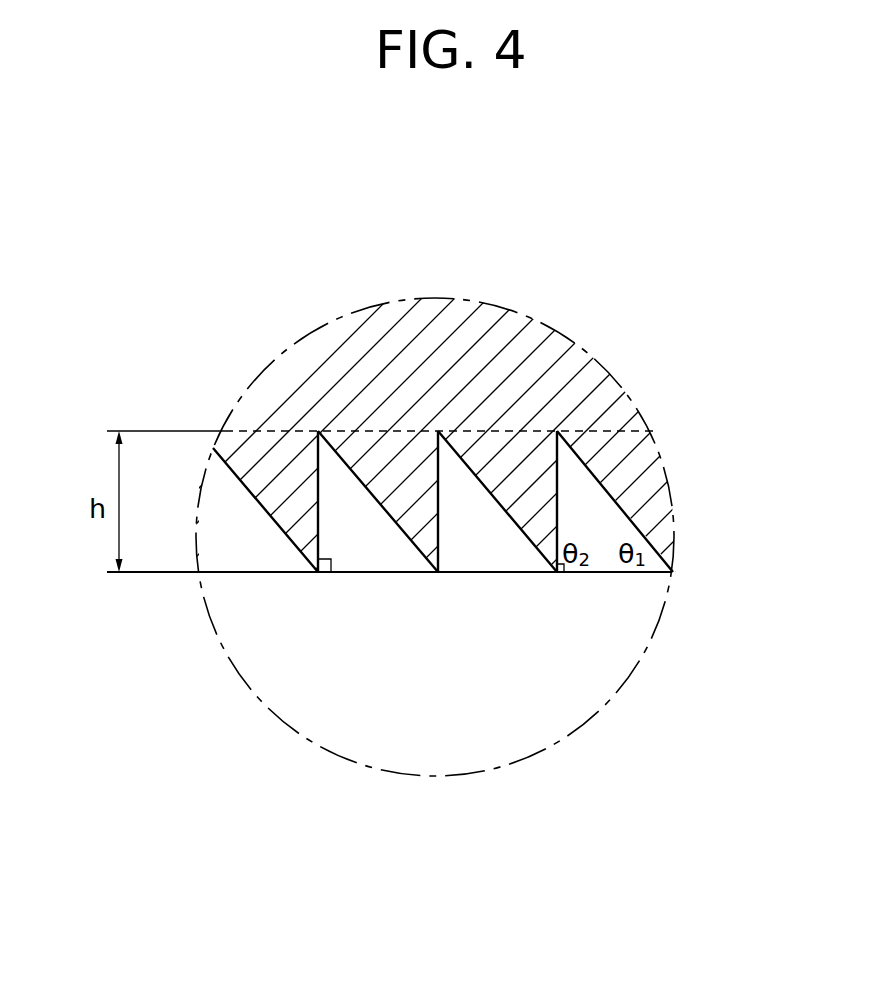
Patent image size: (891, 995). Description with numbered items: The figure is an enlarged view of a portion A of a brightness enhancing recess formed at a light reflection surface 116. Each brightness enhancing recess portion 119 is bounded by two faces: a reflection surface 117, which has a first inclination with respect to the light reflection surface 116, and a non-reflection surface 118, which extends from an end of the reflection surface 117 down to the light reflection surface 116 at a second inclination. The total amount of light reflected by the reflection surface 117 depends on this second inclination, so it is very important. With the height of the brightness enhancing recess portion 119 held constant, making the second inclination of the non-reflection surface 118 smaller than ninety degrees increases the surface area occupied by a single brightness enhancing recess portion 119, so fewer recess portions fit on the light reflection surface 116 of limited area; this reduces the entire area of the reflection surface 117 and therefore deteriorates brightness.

The light reflection surface 116 is at (508, 640).
The reflection surface 117 is at (617, 513).
The non-reflection surface 118 is at (557, 508).
The brightness enhancing recess portion 119 is at (484, 575).
The portion A is at (533, 755).